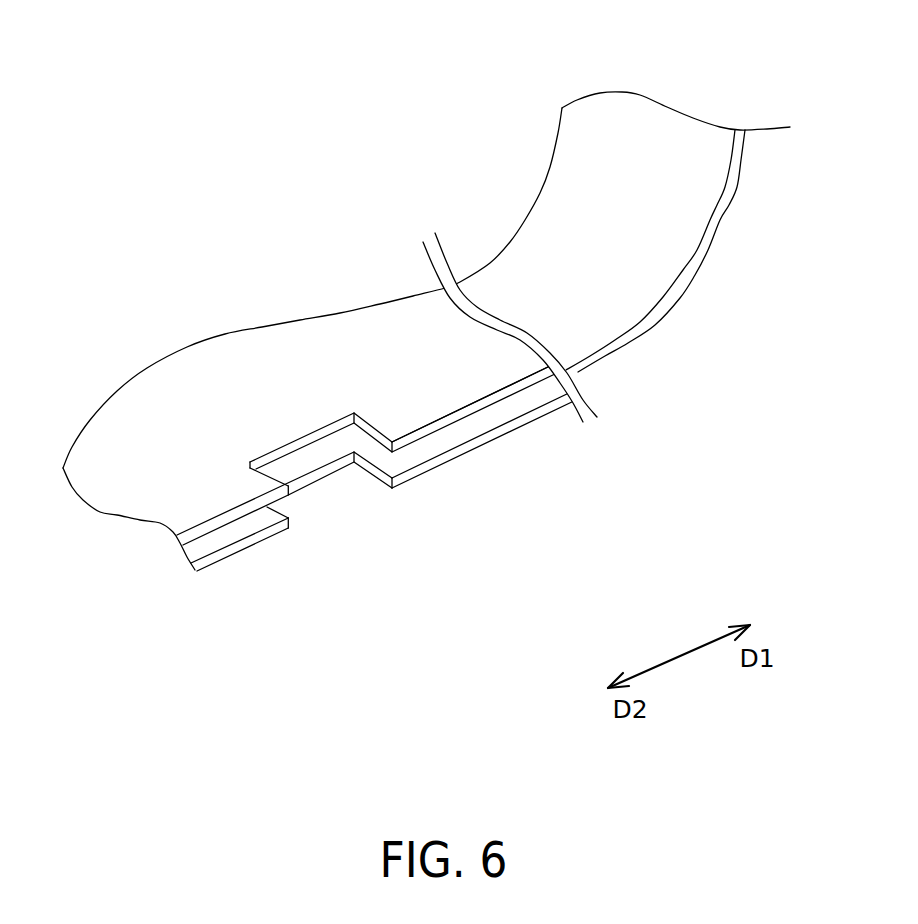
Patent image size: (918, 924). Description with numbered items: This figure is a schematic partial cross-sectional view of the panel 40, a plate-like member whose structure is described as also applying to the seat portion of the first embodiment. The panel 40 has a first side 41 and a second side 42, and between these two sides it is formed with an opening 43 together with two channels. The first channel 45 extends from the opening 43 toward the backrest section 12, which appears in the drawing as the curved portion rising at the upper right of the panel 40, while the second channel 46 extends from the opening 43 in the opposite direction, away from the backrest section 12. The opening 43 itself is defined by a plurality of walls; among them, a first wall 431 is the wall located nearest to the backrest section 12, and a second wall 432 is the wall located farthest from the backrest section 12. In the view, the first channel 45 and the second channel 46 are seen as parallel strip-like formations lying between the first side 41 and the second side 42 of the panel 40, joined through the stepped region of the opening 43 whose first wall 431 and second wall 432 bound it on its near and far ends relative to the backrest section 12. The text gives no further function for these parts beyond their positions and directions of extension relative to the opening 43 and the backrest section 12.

The backrest section 12 is at (628, 140).
The panel 40 is at (163, 310).
The first side 41 is at (277, 347).
The second side 42 is at (537, 423).
The opening 43 is at (342, 478).
The first wall 431 is at (372, 434).
The second wall 432 is at (268, 481).
The first channel 45 is at (492, 457).
The second channel 46 is at (240, 560).